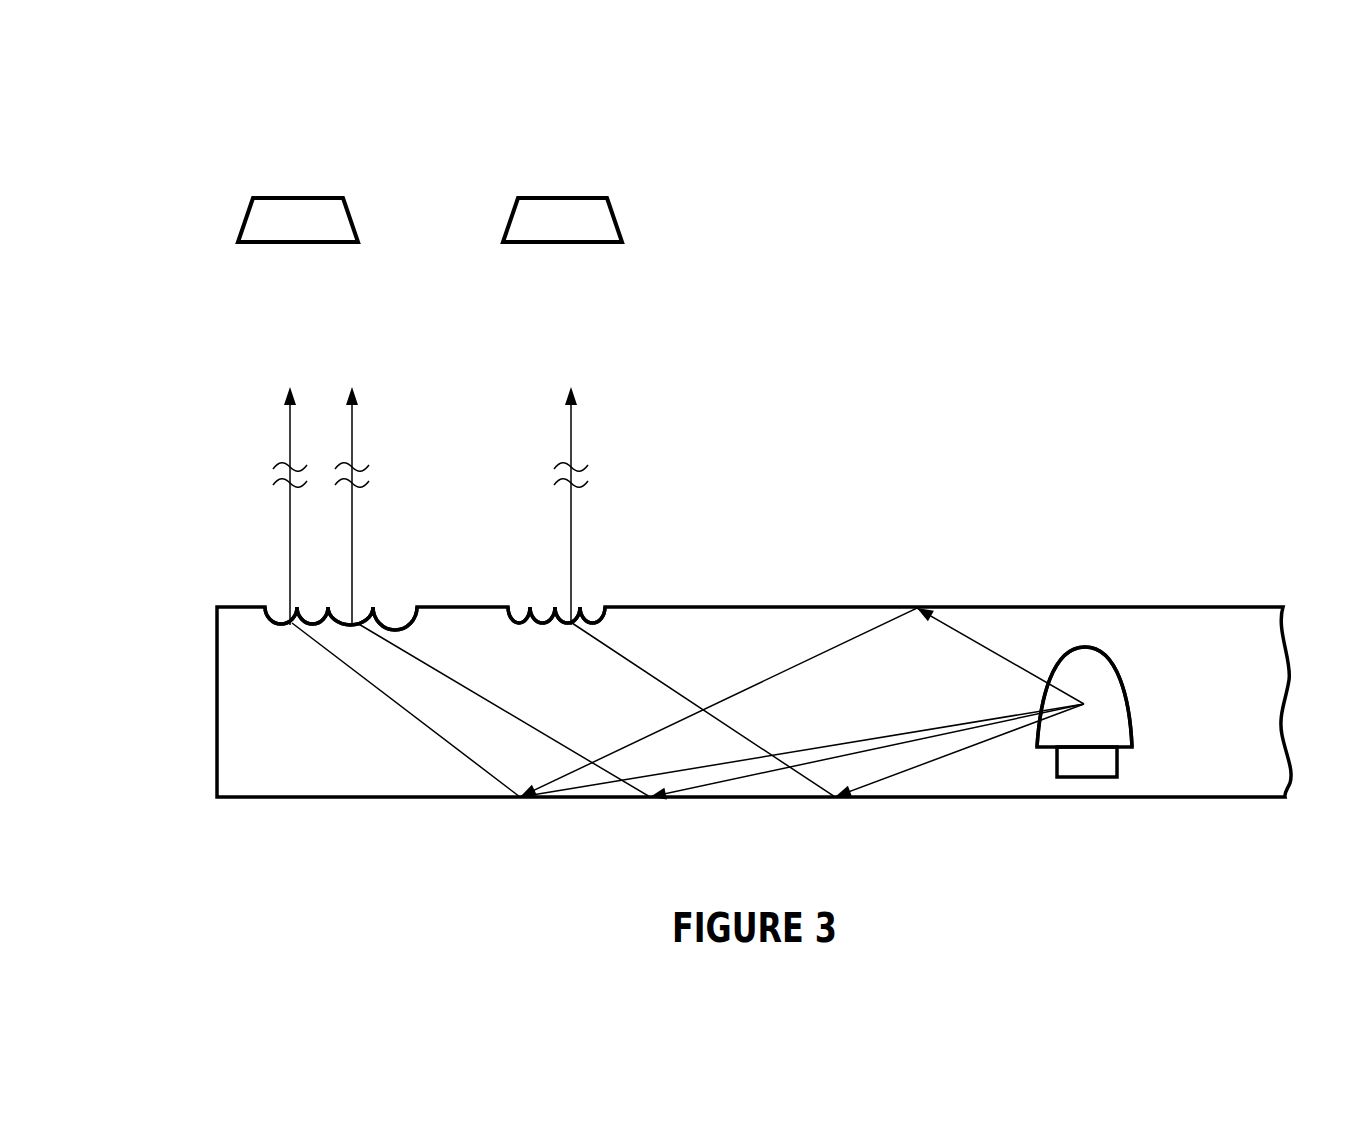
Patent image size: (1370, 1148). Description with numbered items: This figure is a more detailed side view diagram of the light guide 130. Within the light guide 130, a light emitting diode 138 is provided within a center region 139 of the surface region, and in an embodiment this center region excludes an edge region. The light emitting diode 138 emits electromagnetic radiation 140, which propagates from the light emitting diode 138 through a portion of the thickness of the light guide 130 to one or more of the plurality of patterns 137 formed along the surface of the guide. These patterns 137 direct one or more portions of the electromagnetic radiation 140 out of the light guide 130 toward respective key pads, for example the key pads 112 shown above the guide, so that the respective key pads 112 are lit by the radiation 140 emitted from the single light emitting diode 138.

The key pad 112 is at (531, 187).
The light guide 130 is at (1160, 362).
The plurality of patterns 137 is at (520, 600).
The light emitting diode 138 is at (1105, 713).
The center region 139 is at (1078, 612).
The electromagnetic radiation 140 is at (729, 683).